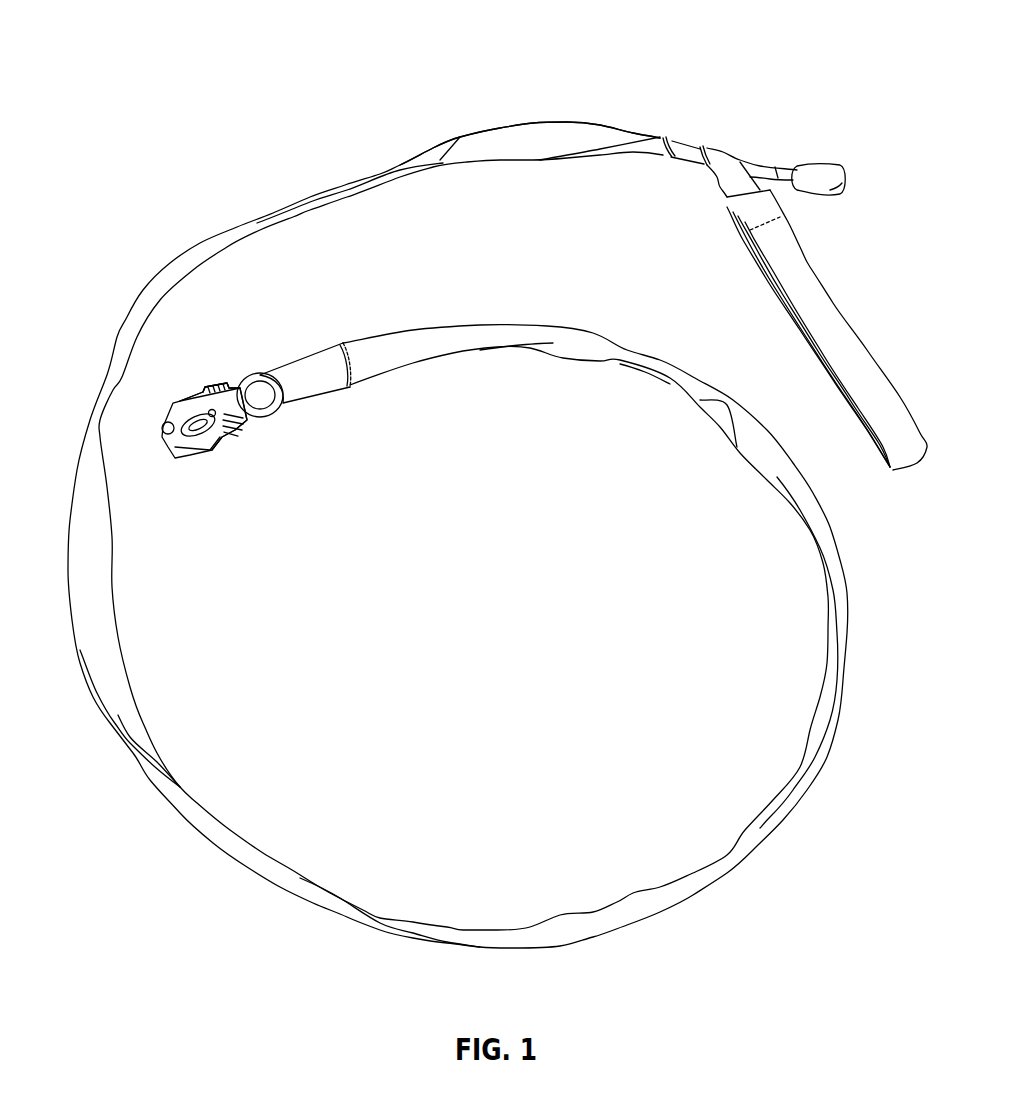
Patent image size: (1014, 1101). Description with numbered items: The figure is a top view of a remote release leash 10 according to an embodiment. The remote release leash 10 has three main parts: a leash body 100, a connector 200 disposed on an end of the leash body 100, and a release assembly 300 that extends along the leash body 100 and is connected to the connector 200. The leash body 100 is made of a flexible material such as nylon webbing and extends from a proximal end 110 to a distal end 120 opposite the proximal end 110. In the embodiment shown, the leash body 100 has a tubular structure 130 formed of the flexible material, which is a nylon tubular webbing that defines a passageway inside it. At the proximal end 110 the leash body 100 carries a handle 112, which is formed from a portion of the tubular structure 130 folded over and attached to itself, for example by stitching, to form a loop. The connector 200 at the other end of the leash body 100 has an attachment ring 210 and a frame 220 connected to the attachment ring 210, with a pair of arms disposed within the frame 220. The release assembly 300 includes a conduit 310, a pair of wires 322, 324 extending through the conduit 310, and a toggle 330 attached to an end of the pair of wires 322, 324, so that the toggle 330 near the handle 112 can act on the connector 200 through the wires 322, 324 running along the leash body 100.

The remote release leash 10 is at (113, 52).
The leash body 100 is at (368, 155).
The proximal end 110 is at (737, 190).
The handle 112 is at (870, 365).
The distal end 120 is at (287, 403).
The tubular structure 130 is at (540, 142).
The connector 200 is at (219, 432).
The attachment ring 210 is at (240, 373).
The frame 220 is at (220, 413).
The release assembly 300 is at (770, 126).
The conduit 310 is at (757, 163).
The wire 322 is at (227, 388).
The wire 324 is at (240, 423).
The toggle 330 is at (840, 180).